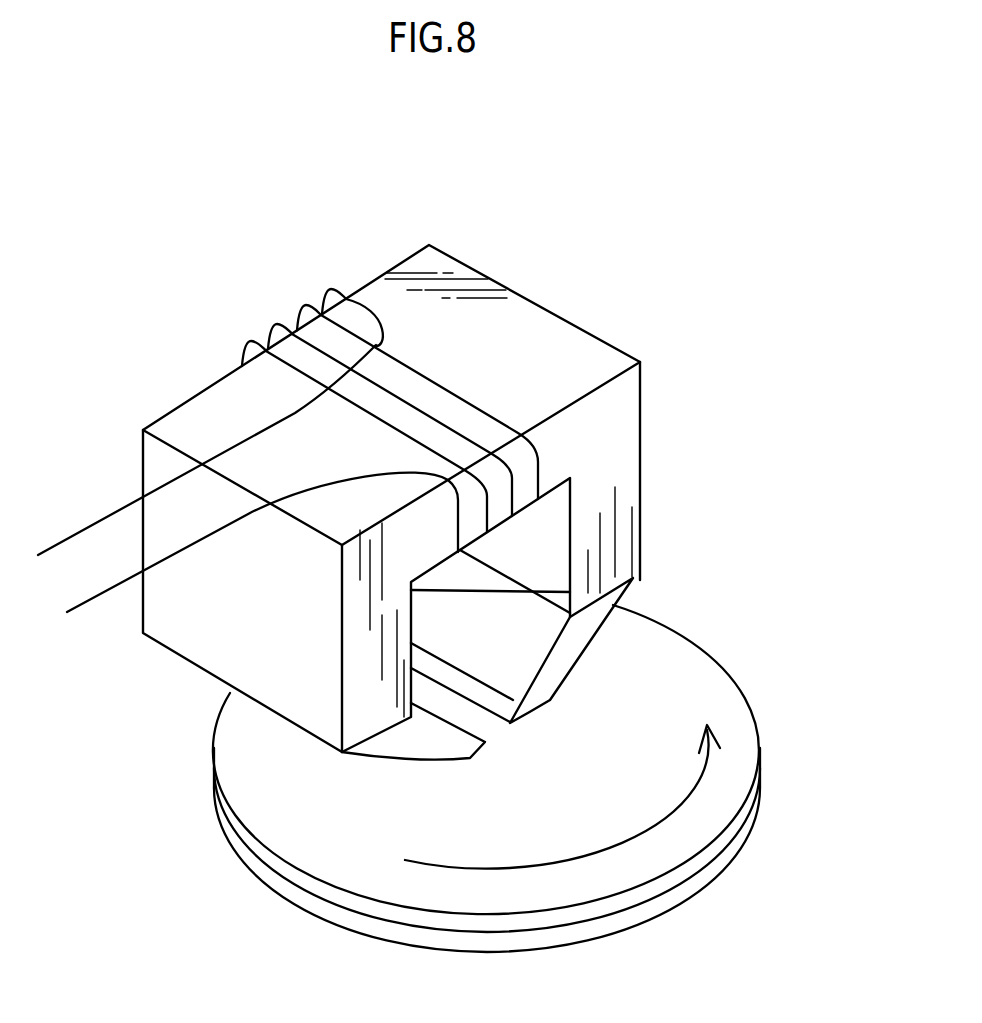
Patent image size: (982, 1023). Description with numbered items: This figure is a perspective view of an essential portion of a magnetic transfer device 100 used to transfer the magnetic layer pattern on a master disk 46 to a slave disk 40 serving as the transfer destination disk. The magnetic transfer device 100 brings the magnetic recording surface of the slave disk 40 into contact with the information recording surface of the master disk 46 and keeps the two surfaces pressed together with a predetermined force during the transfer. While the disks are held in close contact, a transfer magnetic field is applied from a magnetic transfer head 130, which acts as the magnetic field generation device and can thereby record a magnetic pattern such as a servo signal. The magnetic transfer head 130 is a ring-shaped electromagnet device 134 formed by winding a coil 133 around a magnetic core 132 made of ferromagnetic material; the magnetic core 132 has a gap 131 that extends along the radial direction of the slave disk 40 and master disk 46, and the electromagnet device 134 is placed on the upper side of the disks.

The magnetic transfer device 100 is at (517, 245).
The magnetic transfer head 130 is at (223, 367).
The gap 131 is at (493, 730).
The magnetic core 132 is at (590, 640).
The coil 133 is at (330, 285).
The electromagnet device 134 is at (538, 326).
The slave disk 40 is at (692, 887).
The master disk 46 is at (727, 803).